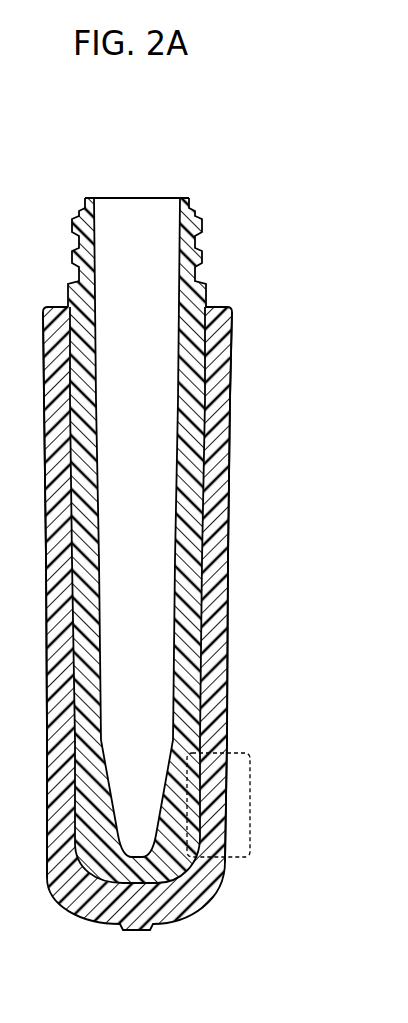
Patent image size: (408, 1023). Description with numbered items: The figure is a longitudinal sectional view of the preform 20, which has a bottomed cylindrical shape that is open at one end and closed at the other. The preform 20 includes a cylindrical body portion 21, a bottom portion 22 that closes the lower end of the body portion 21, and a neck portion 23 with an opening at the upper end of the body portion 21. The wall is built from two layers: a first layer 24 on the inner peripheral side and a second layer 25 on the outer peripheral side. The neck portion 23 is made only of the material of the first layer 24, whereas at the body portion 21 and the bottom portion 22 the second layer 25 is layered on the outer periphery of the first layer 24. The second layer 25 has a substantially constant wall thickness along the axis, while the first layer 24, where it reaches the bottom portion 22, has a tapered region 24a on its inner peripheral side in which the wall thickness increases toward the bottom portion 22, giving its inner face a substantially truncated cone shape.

The preform 20 is at (240, 174).
The body portion 21 is at (230, 432).
The bottom portion 22 is at (183, 920).
The neck portion 23 is at (201, 224).
The first layer 24 is at (190, 552).
The tapered region 24a is at (253, 753).
The second layer 25 is at (215, 648).